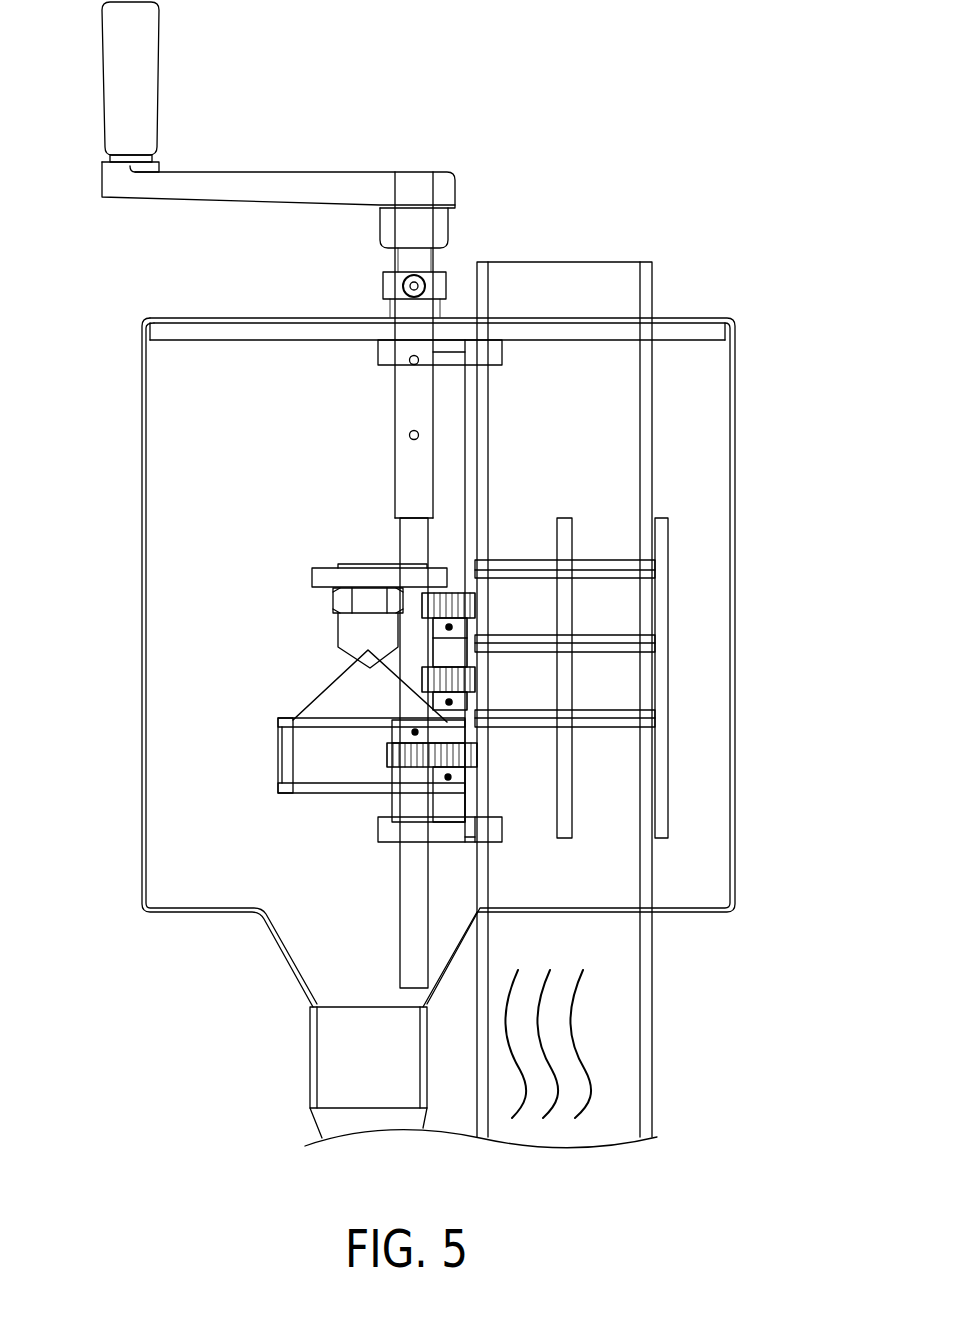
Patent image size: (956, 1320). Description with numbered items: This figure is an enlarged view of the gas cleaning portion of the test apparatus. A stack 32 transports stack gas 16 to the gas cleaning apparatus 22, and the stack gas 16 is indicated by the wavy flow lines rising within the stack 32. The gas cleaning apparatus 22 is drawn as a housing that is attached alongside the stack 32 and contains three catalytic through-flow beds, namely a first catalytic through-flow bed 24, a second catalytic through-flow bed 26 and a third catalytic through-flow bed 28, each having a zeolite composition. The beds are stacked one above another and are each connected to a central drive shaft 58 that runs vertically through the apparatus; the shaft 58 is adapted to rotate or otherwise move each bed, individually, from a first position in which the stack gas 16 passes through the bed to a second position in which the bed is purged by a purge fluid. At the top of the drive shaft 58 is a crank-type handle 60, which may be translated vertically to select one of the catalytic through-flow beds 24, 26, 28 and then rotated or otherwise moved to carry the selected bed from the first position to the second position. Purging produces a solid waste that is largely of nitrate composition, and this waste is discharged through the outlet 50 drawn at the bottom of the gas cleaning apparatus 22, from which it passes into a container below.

The handle 60 is at (157, 100).
The central drive shaft 58 is at (435, 415).
The third catalytic through-flow bed 28 is at (625, 605).
The second catalytic through-flow bed 26 is at (625, 680).
The first catalytic through-flow bed 24 is at (625, 752).
The gas cleaning apparatus 22 is at (735, 880).
The stack 32 is at (652, 1092).
The stack gas 16 is at (573, 997).
The outlet 50 is at (330, 1092).